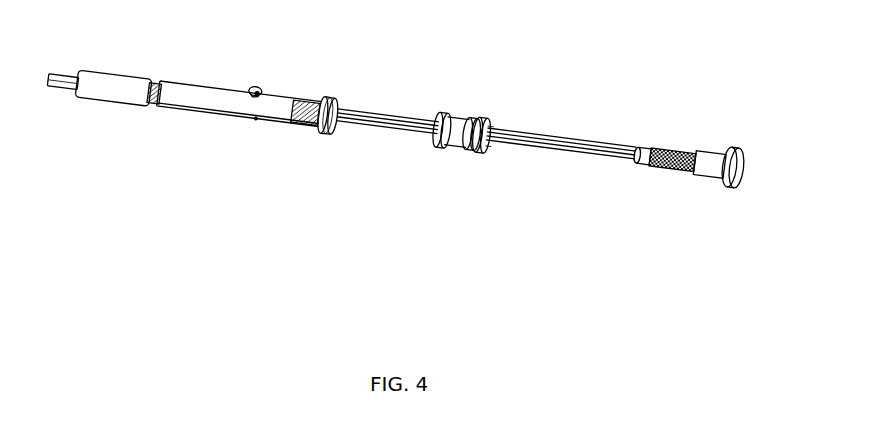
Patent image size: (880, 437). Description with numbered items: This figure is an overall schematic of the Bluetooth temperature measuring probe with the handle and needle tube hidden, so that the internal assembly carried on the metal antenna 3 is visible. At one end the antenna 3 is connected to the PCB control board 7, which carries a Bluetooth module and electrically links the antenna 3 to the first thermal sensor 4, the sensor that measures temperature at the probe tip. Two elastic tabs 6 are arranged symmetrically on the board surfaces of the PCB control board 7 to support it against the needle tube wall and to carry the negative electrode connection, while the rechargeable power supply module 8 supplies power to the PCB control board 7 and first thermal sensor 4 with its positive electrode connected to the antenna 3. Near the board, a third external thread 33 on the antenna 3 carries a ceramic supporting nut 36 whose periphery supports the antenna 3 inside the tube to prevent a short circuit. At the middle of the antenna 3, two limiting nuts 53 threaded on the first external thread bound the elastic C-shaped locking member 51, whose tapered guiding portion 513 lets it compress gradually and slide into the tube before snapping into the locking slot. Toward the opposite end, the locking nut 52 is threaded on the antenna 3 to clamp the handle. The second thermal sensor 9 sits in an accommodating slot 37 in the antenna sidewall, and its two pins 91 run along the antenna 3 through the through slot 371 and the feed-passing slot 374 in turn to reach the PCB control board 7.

The antenna 3 is at (388, 130).
The first thermal sensor 4 is at (61, 78).
The elastic tab 6 is at (257, 93).
The PCB control board 7 is at (225, 118).
The power supply module 8 is at (117, 82).
The second thermal sensor 9 is at (636, 156).
The third external thread 33 is at (316, 130).
The supporting nut 36 is at (327, 103).
The accommodating slot 37 is at (640, 158).
The locking member 51 is at (457, 152).
The locking nut 52 is at (708, 153).
The limiting nut 53 is at (451, 117).
The pin 91 is at (306, 113).
The through slot 371 is at (488, 146).
The feed-passing slot 374 is at (321, 98).
The guiding portion 513 is at (478, 116).